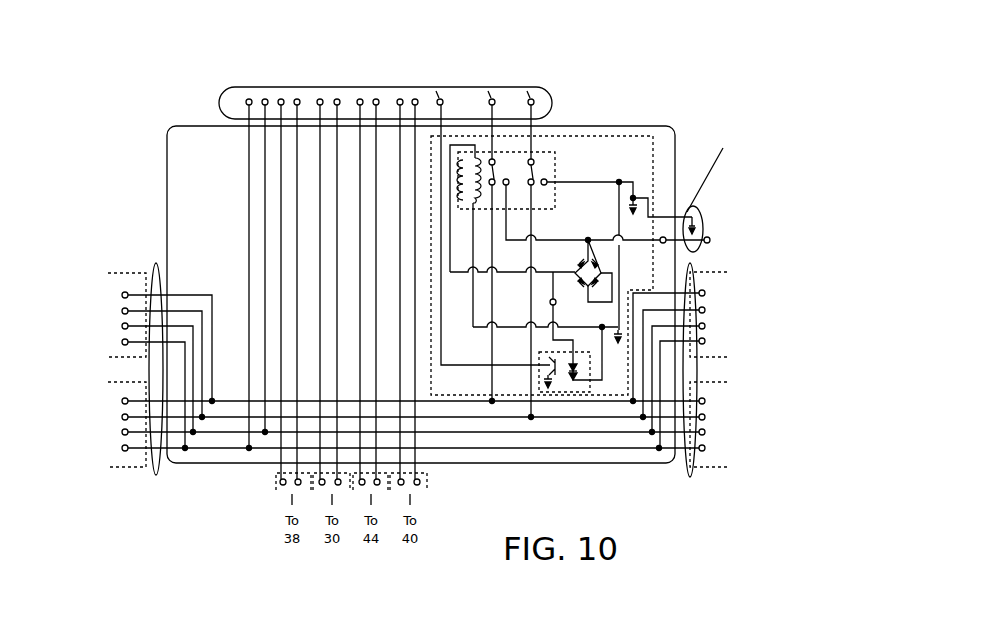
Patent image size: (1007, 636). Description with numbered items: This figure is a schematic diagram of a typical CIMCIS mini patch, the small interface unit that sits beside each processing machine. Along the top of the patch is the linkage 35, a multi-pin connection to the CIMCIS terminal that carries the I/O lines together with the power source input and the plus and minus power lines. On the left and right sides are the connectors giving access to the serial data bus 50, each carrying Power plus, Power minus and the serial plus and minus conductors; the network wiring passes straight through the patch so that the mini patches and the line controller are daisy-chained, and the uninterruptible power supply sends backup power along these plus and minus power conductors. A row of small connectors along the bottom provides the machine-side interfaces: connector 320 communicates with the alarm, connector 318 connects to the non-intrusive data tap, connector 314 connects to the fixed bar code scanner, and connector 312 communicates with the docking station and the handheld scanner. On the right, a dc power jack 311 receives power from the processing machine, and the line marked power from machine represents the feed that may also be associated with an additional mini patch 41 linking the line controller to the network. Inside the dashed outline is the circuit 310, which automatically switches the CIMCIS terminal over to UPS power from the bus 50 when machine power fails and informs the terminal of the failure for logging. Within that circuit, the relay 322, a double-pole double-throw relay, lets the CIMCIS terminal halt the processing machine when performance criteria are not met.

The linkage 35 is at (297, 87).
The circuit 310 is at (563, 245).
The relay 322 is at (576, 170).
The additional mini patch 41 is at (711, 174).
The dc power jack 311 is at (701, 251).
The RS 485 data bus 50 is at (156, 263).
The connector 320 is at (276, 481).
The connector 318 is at (312, 484).
The connector 314 is at (393, 485).
The connector 312 is at (428, 481).